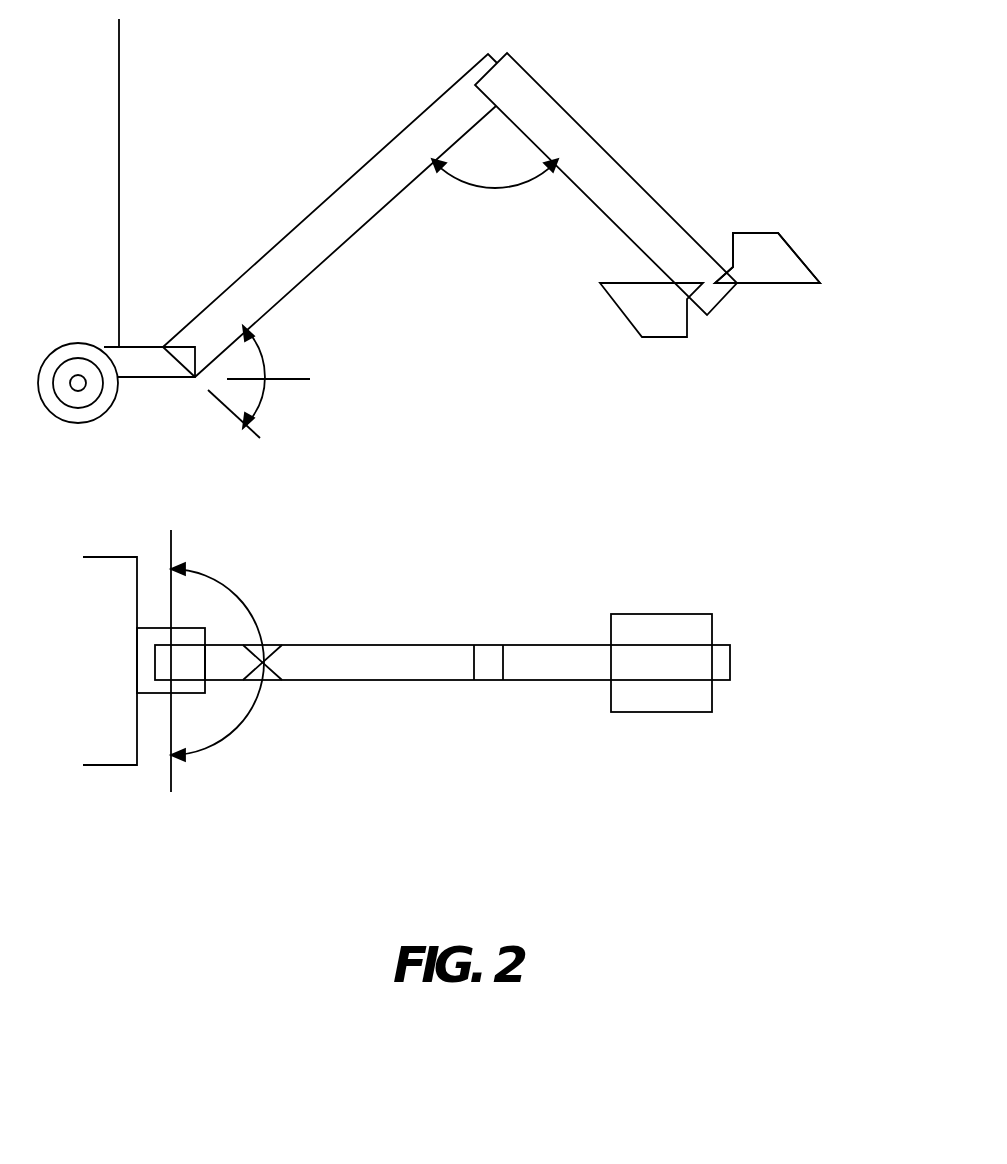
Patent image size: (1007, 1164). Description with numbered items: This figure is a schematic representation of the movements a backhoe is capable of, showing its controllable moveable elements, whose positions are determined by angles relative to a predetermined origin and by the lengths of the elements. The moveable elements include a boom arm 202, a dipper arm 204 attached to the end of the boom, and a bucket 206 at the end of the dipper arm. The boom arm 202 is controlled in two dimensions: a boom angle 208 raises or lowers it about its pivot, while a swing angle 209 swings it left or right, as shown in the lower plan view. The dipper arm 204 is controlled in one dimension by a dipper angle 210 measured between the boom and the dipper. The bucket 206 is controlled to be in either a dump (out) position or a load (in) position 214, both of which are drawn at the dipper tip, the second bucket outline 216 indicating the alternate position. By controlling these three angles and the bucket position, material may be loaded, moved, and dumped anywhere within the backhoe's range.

The boom arm 202 is at (316, 209).
The dipper arm 204 is at (583, 130).
The bucket 206 is at (892, 259).
The boom angle 208 is at (303, 367).
The swing angle 209 is at (240, 619).
The dipper angle 210 is at (518, 182).
The load position 214 is at (808, 328).
The bucket in load position 216 is at (637, 378).